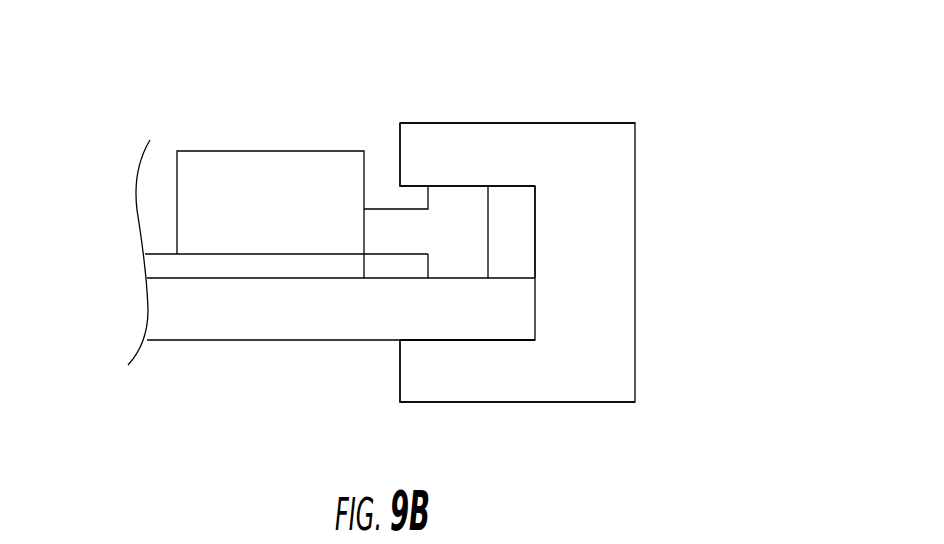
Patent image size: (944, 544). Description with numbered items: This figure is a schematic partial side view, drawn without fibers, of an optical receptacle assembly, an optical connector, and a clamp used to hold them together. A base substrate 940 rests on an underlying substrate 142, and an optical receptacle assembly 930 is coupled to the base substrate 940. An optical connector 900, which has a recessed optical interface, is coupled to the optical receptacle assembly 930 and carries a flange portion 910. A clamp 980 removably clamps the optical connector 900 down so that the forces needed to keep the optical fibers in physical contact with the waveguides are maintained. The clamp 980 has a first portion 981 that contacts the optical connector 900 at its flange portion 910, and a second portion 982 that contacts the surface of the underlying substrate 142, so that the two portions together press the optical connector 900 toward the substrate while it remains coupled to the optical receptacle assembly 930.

The substrate 142 is at (159, 327).
The optical connector 900 is at (385, 208).
The flange portion 910 is at (460, 218).
The optical receptacle assembly 930 is at (207, 149).
The base substrate 940 is at (158, 266).
The clamp 980 is at (663, 172).
The first portion 981 is at (457, 123).
The second portion 982 is at (513, 402).